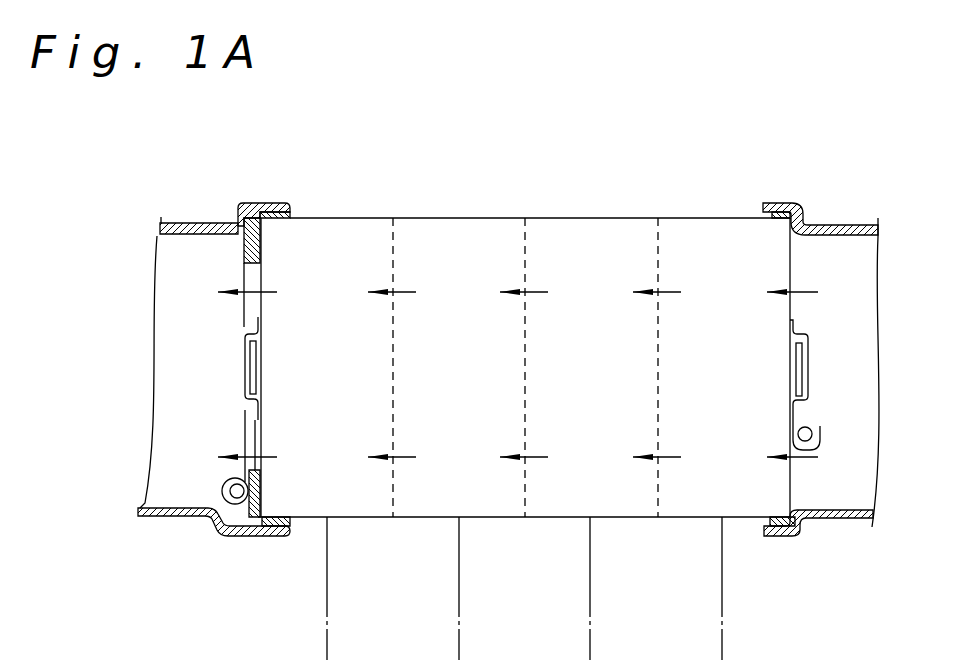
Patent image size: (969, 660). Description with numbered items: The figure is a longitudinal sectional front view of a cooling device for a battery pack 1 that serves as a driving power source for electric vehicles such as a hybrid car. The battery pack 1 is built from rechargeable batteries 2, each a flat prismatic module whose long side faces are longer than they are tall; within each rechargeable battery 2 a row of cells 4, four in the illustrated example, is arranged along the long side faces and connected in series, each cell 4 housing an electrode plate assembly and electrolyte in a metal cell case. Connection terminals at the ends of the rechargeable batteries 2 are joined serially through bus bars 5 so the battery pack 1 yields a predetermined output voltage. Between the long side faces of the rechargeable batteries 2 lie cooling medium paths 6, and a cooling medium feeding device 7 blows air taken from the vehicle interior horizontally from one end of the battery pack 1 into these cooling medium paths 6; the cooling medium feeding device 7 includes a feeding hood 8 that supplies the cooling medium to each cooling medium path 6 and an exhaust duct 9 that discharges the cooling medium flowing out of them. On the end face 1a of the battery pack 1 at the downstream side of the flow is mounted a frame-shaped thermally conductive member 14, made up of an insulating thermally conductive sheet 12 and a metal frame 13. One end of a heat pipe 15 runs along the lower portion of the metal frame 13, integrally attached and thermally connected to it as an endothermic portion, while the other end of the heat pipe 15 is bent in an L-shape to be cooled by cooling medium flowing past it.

The battery pack 1 is at (494, 189).
The end face 1a is at (242, 460).
The rechargeable battery 2 is at (553, 214).
The cell 4 is at (347, 238).
The bus bar 5 is at (258, 372).
The cooling medium path 6 is at (574, 375).
The cooling medium feeding device 7 is at (817, 205).
The feeding hood 8 is at (852, 225).
The exhaust duct 9 is at (213, 227).
The insulating thermally conductive sheet 12 is at (290, 207).
The metal frame 13 is at (228, 223).
The frame-shaped thermally conductive member 14 is at (304, 134).
The heat pipe 15 is at (237, 506).